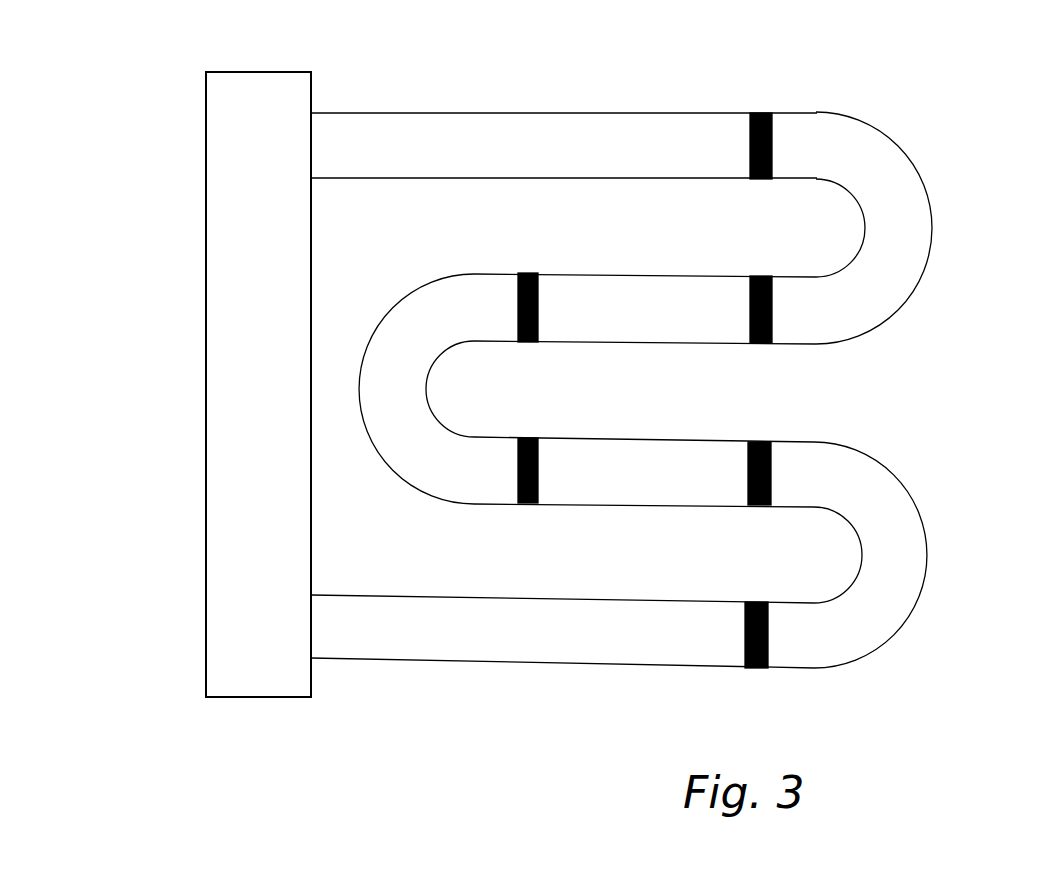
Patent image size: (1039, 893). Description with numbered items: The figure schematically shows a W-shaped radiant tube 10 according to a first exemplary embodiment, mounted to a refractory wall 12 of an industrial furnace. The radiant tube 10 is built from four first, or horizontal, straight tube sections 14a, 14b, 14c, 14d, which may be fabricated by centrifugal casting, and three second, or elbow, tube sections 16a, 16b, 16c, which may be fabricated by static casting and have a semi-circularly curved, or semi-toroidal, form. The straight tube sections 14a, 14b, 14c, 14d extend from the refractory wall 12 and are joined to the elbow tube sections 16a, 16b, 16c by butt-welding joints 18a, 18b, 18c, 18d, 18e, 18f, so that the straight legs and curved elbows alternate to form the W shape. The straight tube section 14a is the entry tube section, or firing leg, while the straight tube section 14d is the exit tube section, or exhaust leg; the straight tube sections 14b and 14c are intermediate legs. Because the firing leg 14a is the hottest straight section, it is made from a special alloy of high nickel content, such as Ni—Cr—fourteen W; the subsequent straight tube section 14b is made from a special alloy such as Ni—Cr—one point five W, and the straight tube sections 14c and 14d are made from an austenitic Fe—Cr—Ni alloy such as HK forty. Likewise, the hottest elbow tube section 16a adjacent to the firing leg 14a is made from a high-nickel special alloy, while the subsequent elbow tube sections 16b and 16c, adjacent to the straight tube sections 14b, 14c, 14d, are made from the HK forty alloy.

The W-shaped radiant tube 10 is at (804, 61).
The refractory wall 12 is at (205, 376).
The straight tube section 14a is at (526, 113).
The straight tube section 14b is at (664, 275).
The straight tube section 14c is at (692, 441).
The straight tube section 14d is at (540, 662).
The elbow tube section 16a is at (933, 255).
The elbow tube section 16b is at (388, 466).
The elbow tube section 16c is at (928, 563).
The butt-welding joint 18a is at (762, 180).
The butt-welding joint 18b is at (760, 345).
The butt-welding joint 18c is at (528, 343).
The butt-welding joint 18d is at (528, 504).
The butt-welding joint 18e is at (758, 506).
The butt-welding joint 18f is at (756, 602).